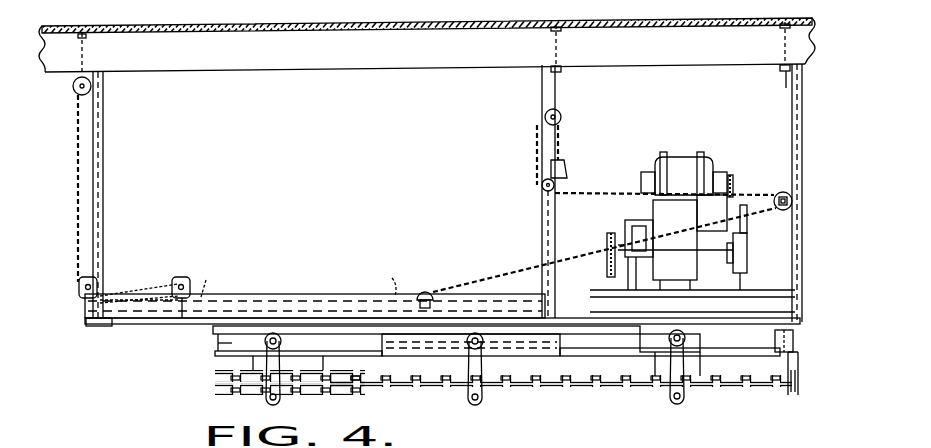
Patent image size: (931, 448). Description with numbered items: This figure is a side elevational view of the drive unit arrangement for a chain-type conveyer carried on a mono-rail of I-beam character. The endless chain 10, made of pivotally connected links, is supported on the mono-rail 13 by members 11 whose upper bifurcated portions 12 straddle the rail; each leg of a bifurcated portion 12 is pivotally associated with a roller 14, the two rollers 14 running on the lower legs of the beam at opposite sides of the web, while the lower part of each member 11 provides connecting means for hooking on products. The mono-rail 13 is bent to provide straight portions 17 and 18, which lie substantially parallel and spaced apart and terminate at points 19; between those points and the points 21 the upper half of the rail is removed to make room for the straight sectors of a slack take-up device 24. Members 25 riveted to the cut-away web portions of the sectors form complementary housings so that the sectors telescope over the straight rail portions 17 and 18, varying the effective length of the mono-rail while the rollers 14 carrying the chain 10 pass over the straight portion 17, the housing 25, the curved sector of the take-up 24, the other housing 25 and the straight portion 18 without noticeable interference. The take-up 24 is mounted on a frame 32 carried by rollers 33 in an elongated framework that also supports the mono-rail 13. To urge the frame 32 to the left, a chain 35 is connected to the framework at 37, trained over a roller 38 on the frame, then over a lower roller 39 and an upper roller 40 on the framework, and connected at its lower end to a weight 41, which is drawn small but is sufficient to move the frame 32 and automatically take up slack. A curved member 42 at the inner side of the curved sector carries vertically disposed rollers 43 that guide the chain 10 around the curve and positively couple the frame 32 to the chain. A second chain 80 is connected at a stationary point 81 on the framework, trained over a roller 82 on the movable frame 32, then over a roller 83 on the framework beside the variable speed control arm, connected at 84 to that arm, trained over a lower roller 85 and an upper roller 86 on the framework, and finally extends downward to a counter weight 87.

The chain 10 is at (722, 386).
The members 11 is at (270, 373).
The upper bifurcated portions 12 is at (797, 360).
The mono-rail 13 is at (742, 342).
The rollers 14 is at (272, 338).
The straight portion 17 is at (695, 352).
The straight portion 18 is at (573, 347).
The points 19 is at (465, 349).
The points 21 is at (621, 352).
The slack take-up device 24 is at (212, 346).
The members 25 is at (392, 350).
The frame 32 is at (259, 296).
The rollers 33 is at (204, 295).
The chain 35 is at (145, 320).
The connection point 37 is at (106, 292).
The roller 38 is at (182, 278).
The lower roller 39 is at (92, 284).
The upper roller 40 is at (79, 92).
The weight 41 is at (108, 139).
The curved member 42 is at (330, 379).
The rollers 43 is at (318, 393).
The chain 80 is at (500, 272).
The stationary point 81 is at (565, 298).
The roller 82 is at (425, 292).
The roller 83 is at (786, 211).
The connection 84 is at (685, 192).
The lower roller 85 is at (541, 187).
The upper roller 86 is at (545, 117).
The counter weight 87 is at (563, 166).